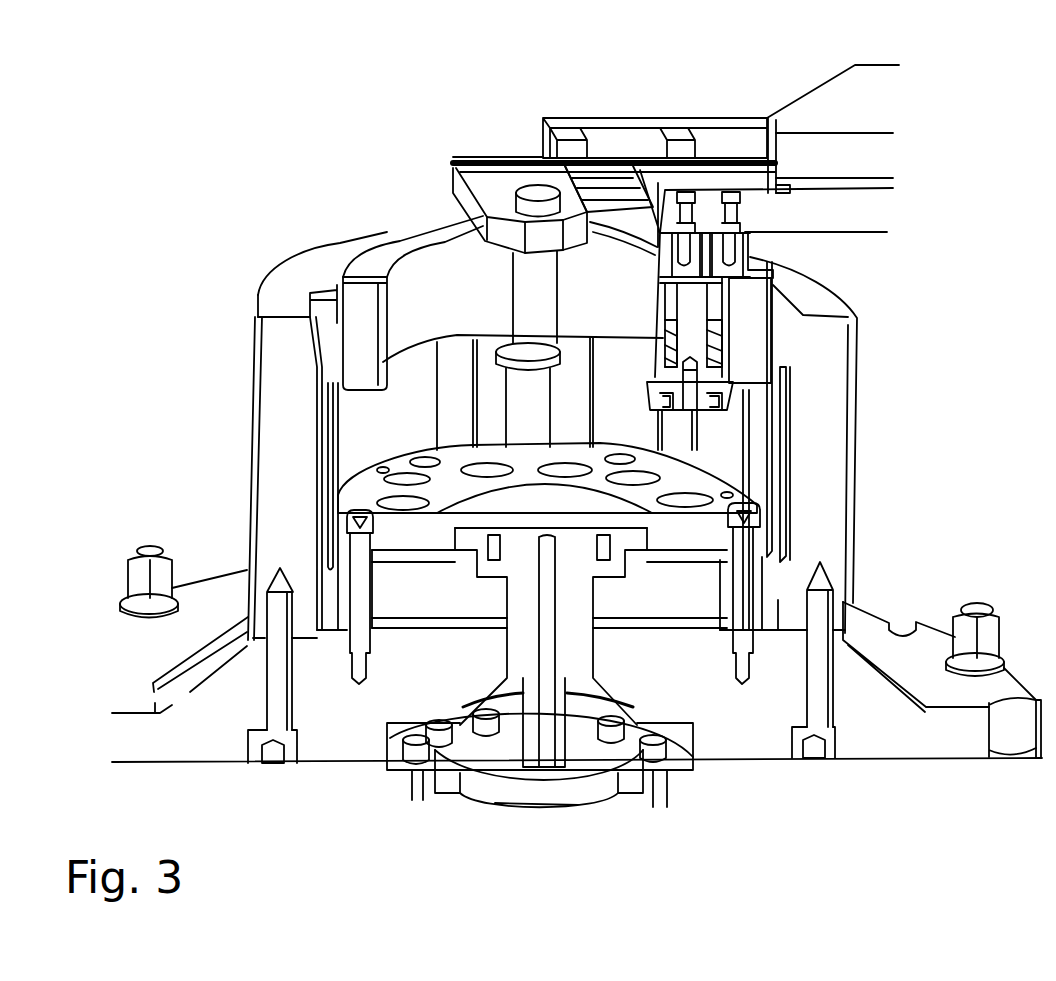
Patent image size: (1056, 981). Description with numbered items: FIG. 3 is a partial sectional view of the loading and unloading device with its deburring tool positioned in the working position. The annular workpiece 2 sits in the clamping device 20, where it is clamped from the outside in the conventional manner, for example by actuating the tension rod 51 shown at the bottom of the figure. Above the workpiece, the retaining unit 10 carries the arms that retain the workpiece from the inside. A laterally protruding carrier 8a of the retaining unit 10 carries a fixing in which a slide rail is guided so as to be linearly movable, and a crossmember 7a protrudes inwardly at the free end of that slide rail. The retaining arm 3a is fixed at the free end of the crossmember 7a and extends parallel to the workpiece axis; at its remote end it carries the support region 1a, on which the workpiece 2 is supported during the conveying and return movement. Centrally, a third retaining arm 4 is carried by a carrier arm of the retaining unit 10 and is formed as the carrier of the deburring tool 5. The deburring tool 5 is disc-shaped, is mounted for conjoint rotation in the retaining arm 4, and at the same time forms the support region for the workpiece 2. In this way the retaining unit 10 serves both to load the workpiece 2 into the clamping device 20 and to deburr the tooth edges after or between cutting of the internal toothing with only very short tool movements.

The support region 1a is at (535, 390).
The workpiece 2 is at (373, 262).
The retaining arm 3a is at (520, 306).
The third retaining arm 4 is at (722, 332).
The deburring tool 5 is at (727, 397).
The crossmember 7a is at (483, 180).
The carrier 8a is at (730, 80).
The retaining unit 10 is at (875, 100).
The clamping device 20 is at (248, 360).
The tension rod 51 is at (527, 755).